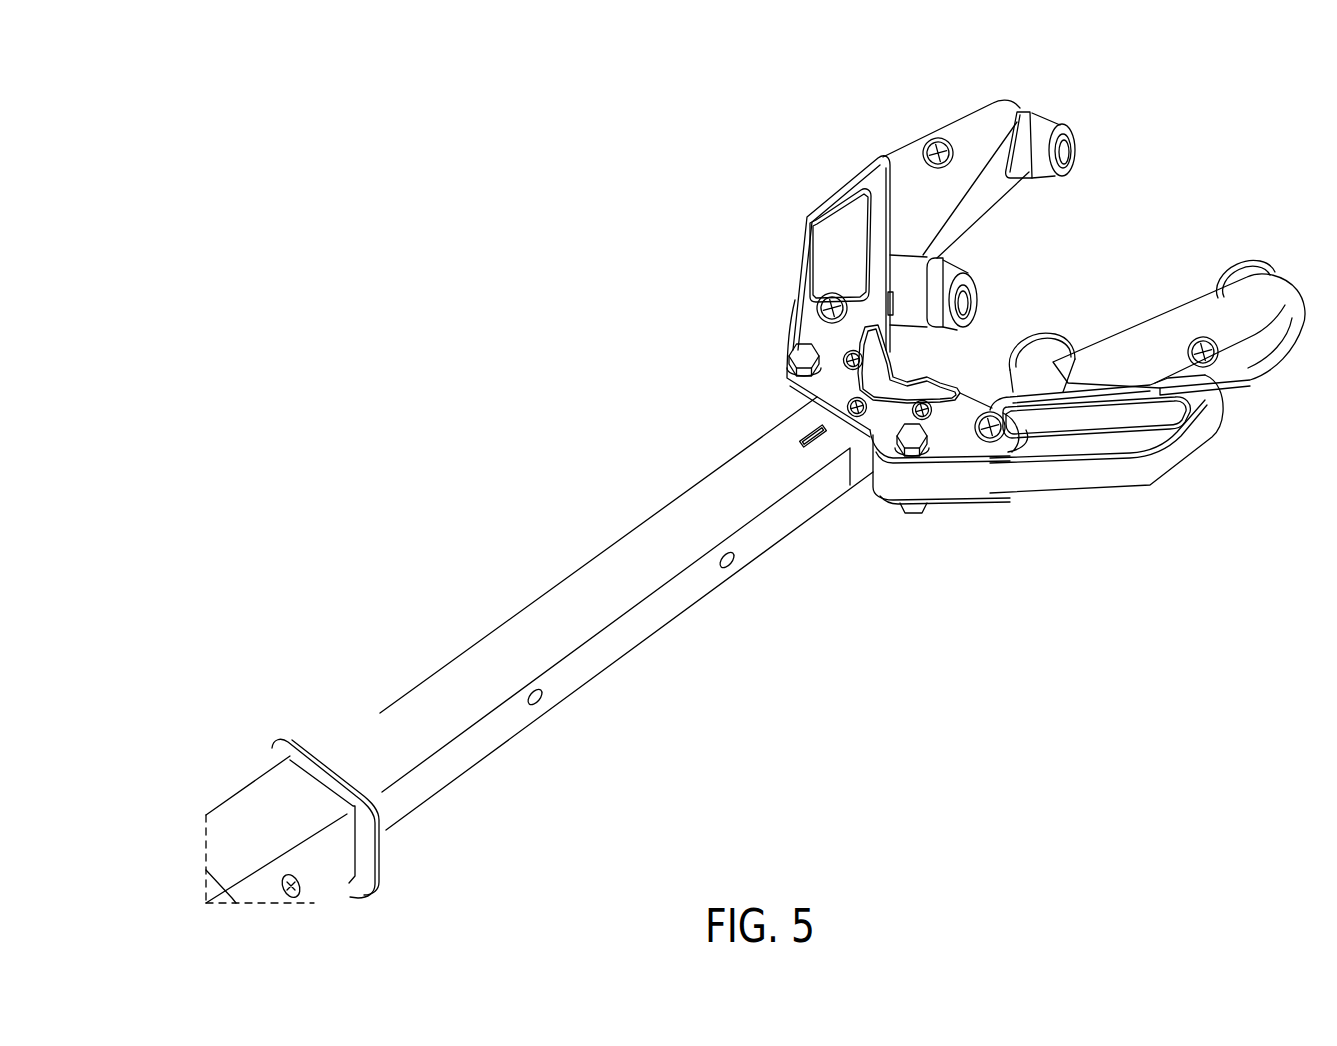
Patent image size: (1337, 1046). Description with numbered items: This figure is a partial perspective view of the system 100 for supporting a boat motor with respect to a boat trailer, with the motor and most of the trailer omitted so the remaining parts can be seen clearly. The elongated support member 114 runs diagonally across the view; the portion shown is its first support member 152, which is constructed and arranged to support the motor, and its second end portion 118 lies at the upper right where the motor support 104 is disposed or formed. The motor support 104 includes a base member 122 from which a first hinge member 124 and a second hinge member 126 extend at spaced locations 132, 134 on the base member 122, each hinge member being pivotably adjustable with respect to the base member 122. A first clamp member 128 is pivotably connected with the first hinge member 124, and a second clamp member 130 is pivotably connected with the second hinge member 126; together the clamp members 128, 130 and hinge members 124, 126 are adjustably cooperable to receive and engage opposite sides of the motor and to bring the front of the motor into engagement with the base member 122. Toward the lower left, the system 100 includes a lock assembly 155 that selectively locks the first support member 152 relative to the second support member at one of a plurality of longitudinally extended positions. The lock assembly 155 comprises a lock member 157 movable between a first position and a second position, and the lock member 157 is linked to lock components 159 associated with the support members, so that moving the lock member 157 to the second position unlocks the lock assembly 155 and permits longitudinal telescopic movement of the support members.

The system 100 is at (495, 536).
The motor support 104 is at (1165, 185).
The support member 114 is at (403, 710).
The second end portion 118 is at (832, 424).
The base member 122 is at (952, 430).
The first hinge member 124 is at (1097, 438).
The second hinge member 126 is at (850, 222).
The first clamp member 128 is at (1243, 307).
The second clamp member 130 is at (980, 132).
The spaced location 132 is at (940, 448).
The spaced location 134 is at (815, 330).
The first support member 152 is at (660, 613).
The lock assembly 155 is at (254, 790).
The lock member 157 is at (293, 897).
The lock components 159 is at (540, 702).